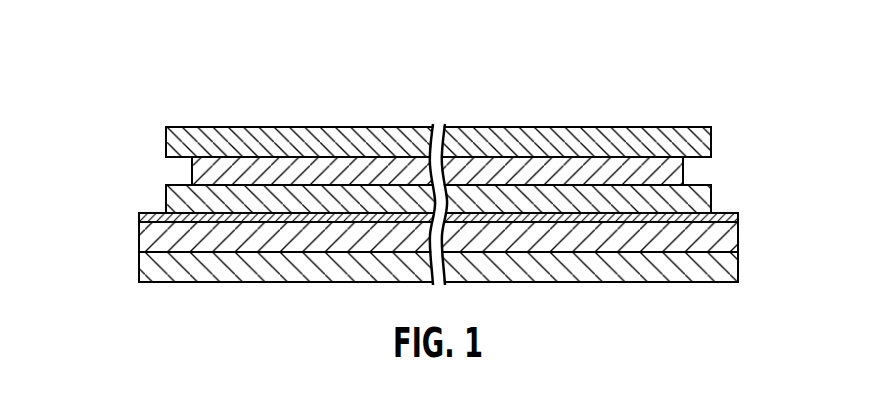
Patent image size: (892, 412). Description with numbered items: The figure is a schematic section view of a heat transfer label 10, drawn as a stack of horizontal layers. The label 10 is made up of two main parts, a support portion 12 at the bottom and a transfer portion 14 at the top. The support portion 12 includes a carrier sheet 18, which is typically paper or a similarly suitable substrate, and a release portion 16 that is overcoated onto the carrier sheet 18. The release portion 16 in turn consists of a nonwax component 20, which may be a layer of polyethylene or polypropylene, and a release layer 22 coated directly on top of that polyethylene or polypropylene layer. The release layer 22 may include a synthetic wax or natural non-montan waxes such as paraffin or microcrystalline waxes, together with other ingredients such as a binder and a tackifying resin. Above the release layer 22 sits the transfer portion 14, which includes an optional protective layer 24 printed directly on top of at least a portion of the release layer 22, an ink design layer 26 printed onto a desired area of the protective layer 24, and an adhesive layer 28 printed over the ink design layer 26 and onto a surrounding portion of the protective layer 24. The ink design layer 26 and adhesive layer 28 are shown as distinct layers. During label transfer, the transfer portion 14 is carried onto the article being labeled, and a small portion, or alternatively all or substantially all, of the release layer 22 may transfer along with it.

The heat transfer label 10 is at (277, 48).
The support portion 12 is at (74, 246).
The transfer portion 14 is at (80, 277).
The release portion 16 is at (131, 248).
The carrier sheet 18 is at (739, 262).
The nonwax component 20 is at (739, 233).
The release layer 22 is at (740, 217).
The protective layer 24 is at (712, 198).
The ink design layer 26 is at (684, 170).
The adhesive layer 28 is at (712, 140).